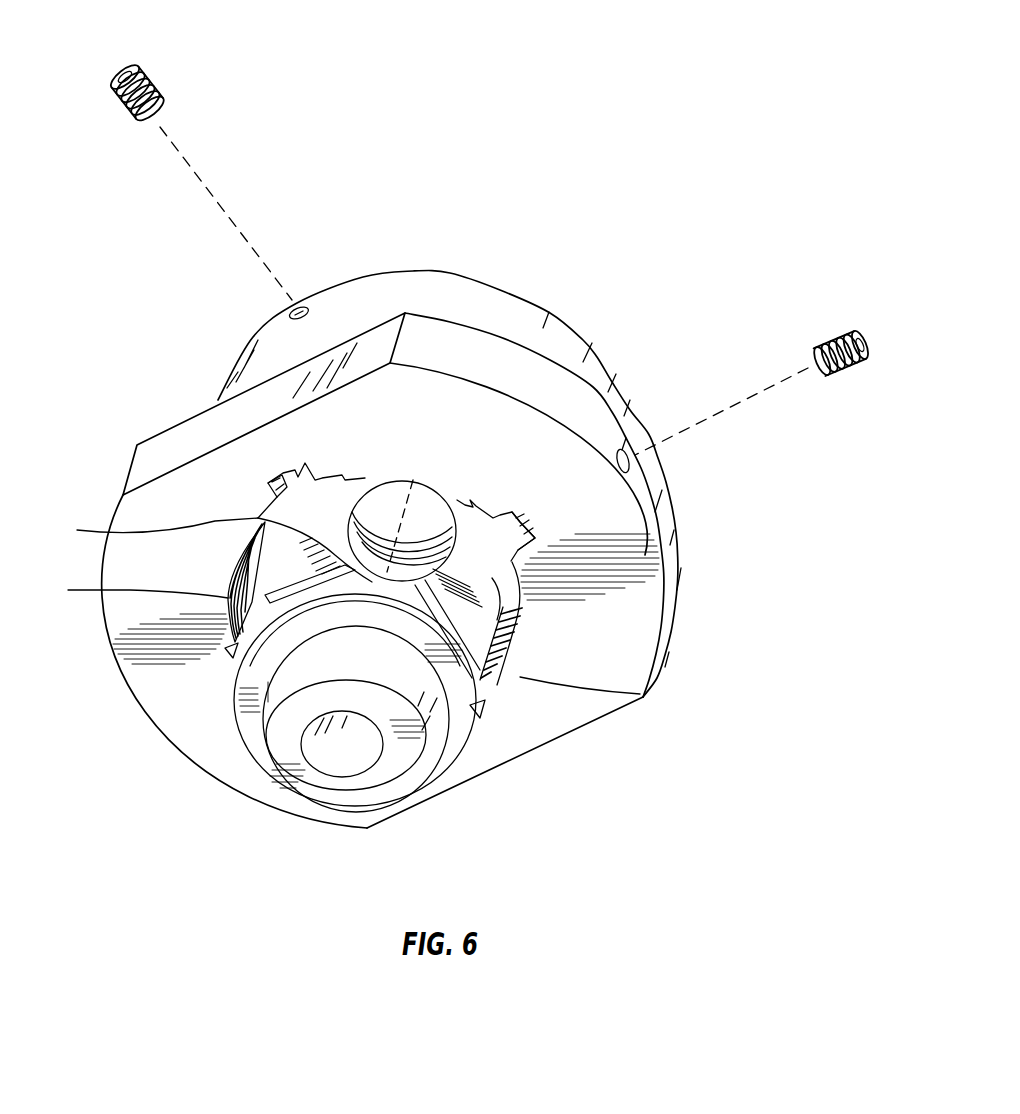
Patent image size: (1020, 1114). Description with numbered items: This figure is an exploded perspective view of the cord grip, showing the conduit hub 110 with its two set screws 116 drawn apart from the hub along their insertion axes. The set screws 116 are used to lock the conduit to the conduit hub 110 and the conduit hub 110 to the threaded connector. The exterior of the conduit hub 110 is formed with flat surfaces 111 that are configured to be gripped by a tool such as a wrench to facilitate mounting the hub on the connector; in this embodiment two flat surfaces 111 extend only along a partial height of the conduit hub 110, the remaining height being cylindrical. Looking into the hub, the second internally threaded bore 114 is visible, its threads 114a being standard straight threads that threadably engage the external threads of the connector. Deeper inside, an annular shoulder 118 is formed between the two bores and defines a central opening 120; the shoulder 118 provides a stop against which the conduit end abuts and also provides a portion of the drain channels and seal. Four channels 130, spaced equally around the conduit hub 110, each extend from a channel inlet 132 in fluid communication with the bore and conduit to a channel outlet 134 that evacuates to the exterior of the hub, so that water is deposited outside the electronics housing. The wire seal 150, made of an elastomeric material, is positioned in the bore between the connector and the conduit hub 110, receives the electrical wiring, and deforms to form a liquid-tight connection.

The conduit hub 110 is at (570, 327).
The flat surfaces 111 is at (170, 447).
The second internally threaded bore 114 is at (129, 590).
The threads 114a is at (640, 694).
The set screws 116 is at (120, 68).
The annular shoulder 118 is at (505, 602).
The central opening 120 is at (440, 496).
The channel 130 is at (327, 473).
The channel inlet 132 is at (690, 655).
The channel outlet 134 is at (272, 478).
The wire seal 150 is at (448, 766).